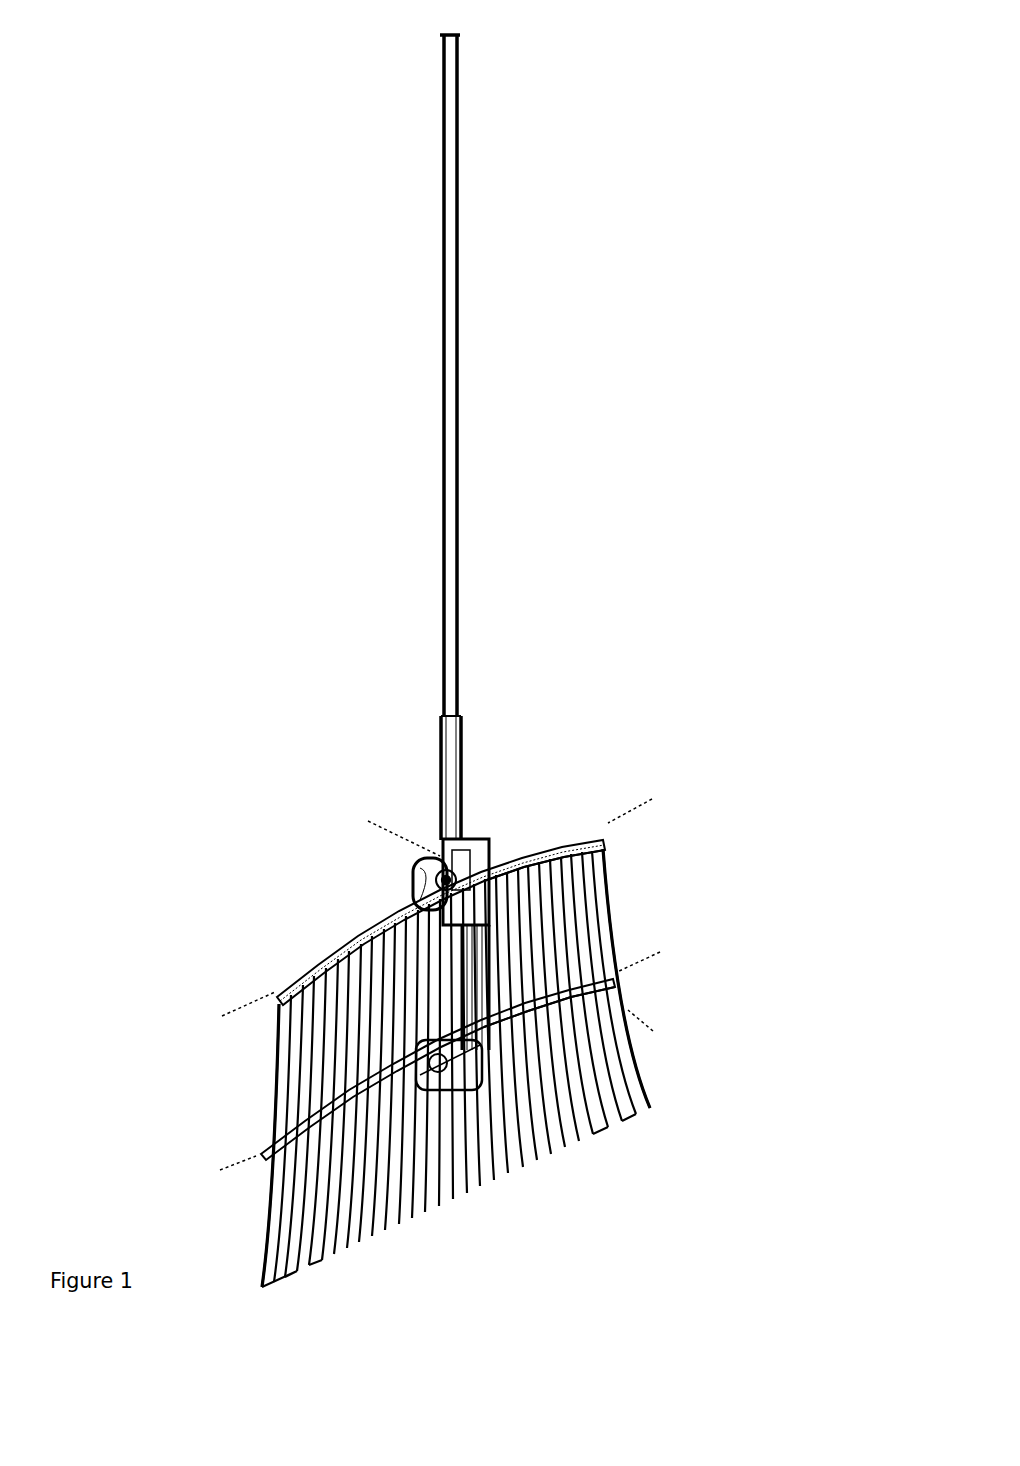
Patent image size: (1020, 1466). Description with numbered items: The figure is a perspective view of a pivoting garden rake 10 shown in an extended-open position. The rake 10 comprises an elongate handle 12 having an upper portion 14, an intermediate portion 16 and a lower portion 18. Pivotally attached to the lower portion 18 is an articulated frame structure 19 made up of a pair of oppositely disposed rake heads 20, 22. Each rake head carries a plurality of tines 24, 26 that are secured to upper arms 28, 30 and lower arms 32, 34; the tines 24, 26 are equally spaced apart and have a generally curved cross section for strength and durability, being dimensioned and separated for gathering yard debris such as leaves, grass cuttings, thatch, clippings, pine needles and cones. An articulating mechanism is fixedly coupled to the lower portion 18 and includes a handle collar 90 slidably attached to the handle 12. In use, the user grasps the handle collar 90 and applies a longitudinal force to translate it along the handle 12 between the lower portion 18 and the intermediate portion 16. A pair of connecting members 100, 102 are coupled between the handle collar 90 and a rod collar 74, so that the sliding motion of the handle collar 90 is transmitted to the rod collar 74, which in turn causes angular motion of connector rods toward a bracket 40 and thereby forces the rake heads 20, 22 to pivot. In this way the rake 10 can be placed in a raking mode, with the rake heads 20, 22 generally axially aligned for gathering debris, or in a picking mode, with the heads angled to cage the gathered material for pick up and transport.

The rake 10 is at (525, 1289).
The elongate handle 12 is at (388, 304).
The upper portion 14 is at (457, 78).
The intermediate portion 16 is at (460, 340).
The lower portion 18 is at (434, 864).
The articulated frame structure 19 is at (323, 824).
The rake head 20 is at (410, 1262).
The rake head 22 is at (606, 1162).
The tines 24 is at (357, 1160).
The tines 26 is at (541, 1098).
The upper arm 28 is at (348, 943).
The upper arm 30 is at (545, 849).
The lower arm 32 is at (287, 1130).
The lower arm 34 is at (560, 993).
The bracket 40 is at (419, 887).
The rod collar 74 is at (473, 1068).
The handle collar 90 is at (462, 793).
The connecting member 100 is at (457, 857).
The connecting member 102 is at (470, 847).